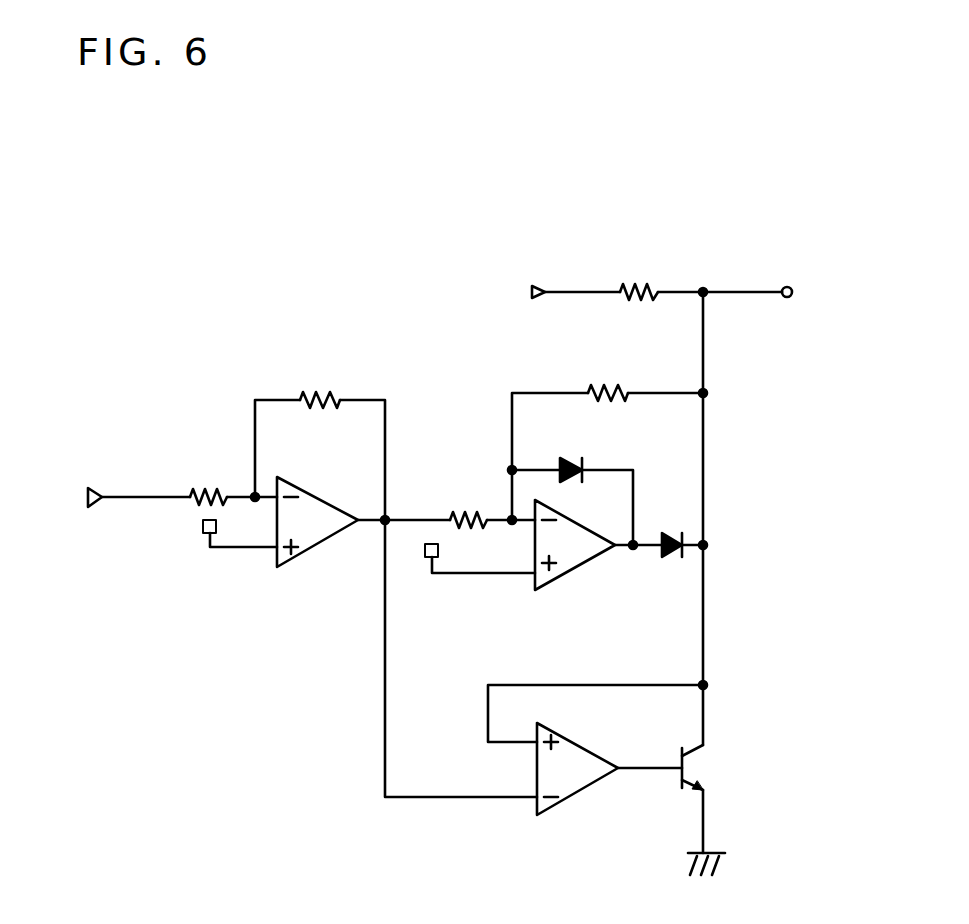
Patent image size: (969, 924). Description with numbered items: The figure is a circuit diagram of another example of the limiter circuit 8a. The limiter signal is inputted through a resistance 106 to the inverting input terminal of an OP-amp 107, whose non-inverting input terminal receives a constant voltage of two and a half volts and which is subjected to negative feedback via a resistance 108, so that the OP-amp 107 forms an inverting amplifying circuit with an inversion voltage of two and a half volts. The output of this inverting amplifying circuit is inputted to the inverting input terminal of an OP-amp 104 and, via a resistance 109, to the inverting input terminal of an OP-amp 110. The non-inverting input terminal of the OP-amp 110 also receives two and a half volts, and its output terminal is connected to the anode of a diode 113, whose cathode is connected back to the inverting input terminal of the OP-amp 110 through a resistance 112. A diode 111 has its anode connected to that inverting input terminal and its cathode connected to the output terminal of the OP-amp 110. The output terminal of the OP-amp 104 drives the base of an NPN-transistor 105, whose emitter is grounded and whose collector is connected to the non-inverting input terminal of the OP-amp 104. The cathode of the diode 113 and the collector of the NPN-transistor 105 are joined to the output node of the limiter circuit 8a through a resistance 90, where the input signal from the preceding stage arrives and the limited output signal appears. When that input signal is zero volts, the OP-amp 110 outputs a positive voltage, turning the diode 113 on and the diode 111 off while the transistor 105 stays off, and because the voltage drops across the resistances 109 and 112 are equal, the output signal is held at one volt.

The limiter circuit 8a is at (440, 322).
The resistance 90 is at (644, 286).
The OP-amp 104 is at (566, 800).
The NPN-transistor 105 is at (691, 745).
The resistance 106 is at (213, 484).
The OP-amp 107 is at (322, 550).
The resistance 108 is at (322, 390).
The resistance 109 is at (468, 508).
The OP-amp 110 is at (578, 572).
The diode 111 is at (560, 465).
The resistance 112 is at (610, 384).
The diode 113 is at (676, 538).